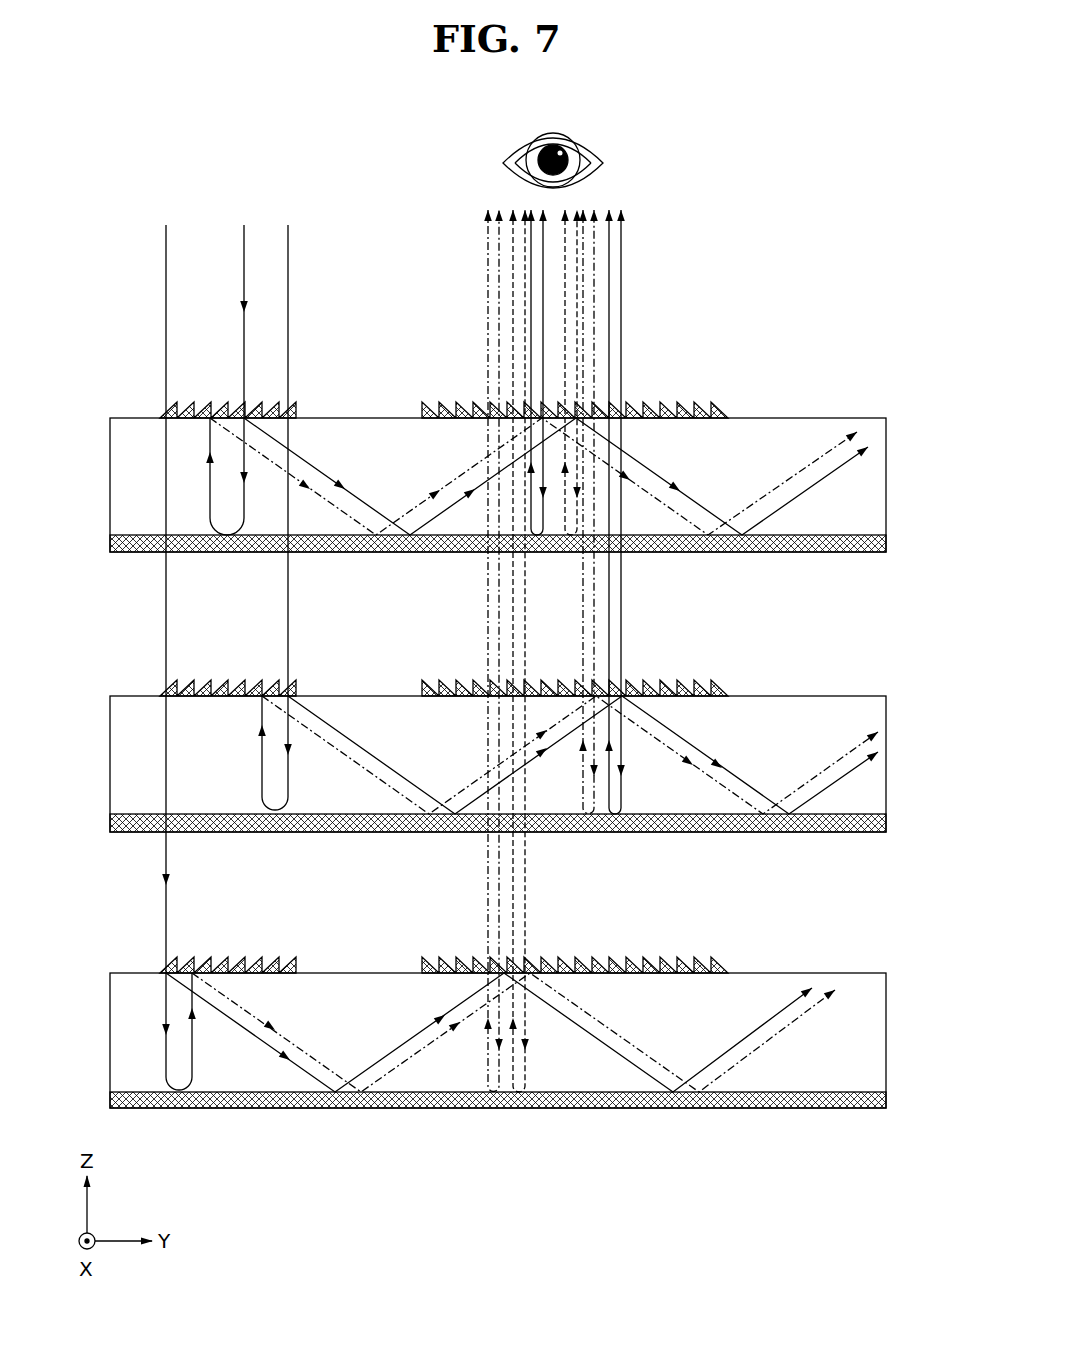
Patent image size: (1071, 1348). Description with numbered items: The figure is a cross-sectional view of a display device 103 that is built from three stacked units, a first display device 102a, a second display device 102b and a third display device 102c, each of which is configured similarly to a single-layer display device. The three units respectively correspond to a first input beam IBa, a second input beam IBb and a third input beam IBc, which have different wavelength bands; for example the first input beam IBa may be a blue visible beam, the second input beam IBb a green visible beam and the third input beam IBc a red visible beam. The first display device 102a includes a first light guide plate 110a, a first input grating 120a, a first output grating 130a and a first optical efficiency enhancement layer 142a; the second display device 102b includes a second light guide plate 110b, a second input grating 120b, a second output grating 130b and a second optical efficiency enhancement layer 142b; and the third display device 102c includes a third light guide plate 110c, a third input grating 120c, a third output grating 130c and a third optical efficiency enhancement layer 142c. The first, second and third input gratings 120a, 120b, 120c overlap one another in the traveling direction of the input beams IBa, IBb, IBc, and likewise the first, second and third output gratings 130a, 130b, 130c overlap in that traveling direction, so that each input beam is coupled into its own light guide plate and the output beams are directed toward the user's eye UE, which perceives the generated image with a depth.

The display device 103 is at (795, 103).
The user's eye UE is at (602, 133).
The first input beam IBa is at (243, 276).
The second input beam IBb is at (290, 276).
The third input beam IBc is at (165, 253).
The first display device 102a is at (485, 474).
The second display device 102b is at (485, 752).
The third display device 102c is at (486, 1029).
The first light guide plate 110a is at (887, 500).
The second light guide plate 110b is at (887, 780).
The third light guide plate 110c is at (887, 1057).
The first input grating 120a is at (157, 401).
The second input grating 120b is at (160, 679).
The third input grating 120c is at (160, 956).
The first output grating 130a is at (420, 399).
The second output grating 130b is at (420, 677).
The third output grating 130c is at (420, 954).
The first optical efficiency enhancement layer 142a is at (110, 545).
The second optical efficiency enhancement layer 142b is at (110, 824).
The third optical efficiency enhancement layer 142c is at (110, 1101).